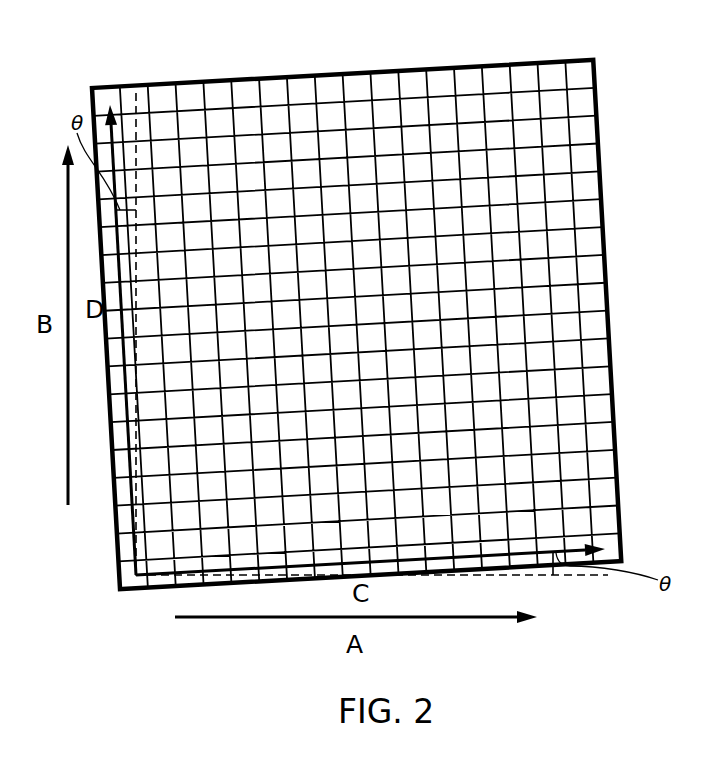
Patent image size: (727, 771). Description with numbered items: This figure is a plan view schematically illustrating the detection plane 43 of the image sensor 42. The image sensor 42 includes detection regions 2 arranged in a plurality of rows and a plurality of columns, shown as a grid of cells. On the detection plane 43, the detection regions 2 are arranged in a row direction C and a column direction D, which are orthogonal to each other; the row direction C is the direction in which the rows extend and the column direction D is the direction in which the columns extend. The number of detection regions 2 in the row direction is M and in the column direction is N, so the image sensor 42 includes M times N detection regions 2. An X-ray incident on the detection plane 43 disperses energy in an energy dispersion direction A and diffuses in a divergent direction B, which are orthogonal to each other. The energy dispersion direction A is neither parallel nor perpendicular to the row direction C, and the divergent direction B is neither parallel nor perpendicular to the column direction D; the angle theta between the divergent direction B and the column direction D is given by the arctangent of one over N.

The detection regions 2 is at (110, 88).
The image sensor 42 is at (398, 294).
The detection plane 43 is at (620, 226).